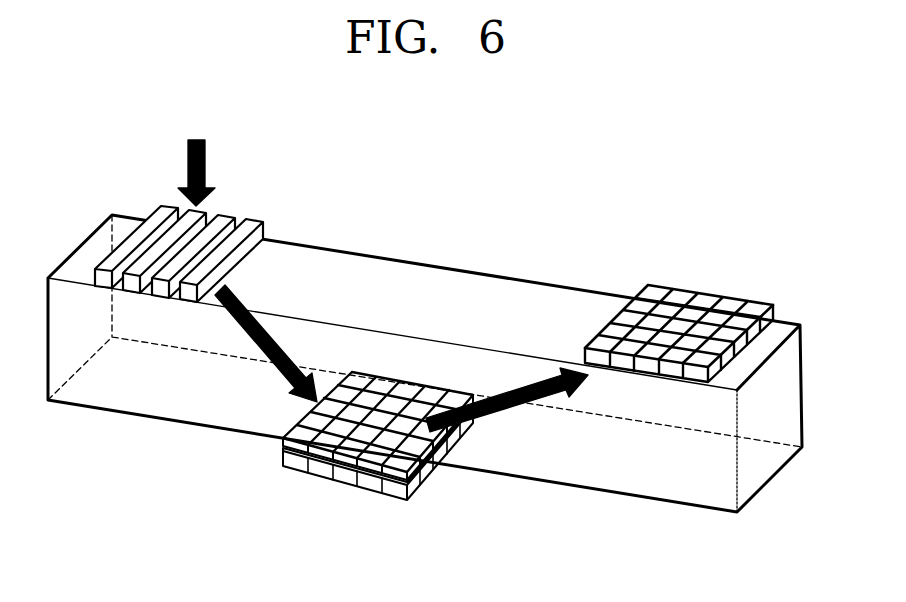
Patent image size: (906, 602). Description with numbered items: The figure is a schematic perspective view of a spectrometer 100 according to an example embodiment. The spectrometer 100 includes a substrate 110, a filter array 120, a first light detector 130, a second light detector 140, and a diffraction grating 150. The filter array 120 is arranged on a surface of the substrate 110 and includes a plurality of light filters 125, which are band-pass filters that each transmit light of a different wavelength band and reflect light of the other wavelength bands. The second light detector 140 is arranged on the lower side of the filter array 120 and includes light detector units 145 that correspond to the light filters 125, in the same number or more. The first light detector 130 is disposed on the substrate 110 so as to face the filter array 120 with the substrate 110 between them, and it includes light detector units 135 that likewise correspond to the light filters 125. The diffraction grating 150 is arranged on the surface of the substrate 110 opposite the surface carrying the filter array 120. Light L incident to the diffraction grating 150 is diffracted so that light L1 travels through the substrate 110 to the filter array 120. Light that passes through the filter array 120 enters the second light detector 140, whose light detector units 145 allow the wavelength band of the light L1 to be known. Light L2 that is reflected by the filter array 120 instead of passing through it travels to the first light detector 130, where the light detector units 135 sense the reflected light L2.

The spectrometer 100 is at (449, 362).
The substrate 110 is at (768, 462).
The filter array 120 is at (314, 445).
The light filters 125 is at (303, 435).
The first light detector 130 is at (683, 281).
The light detector units 135 is at (733, 297).
The second light detector 140 is at (367, 483).
The light detector units 145 is at (320, 465).
The diffraction grating 150 is at (158, 215).
The light L is at (208, 160).
The light L1 is at (272, 337).
The light L2 is at (510, 412).